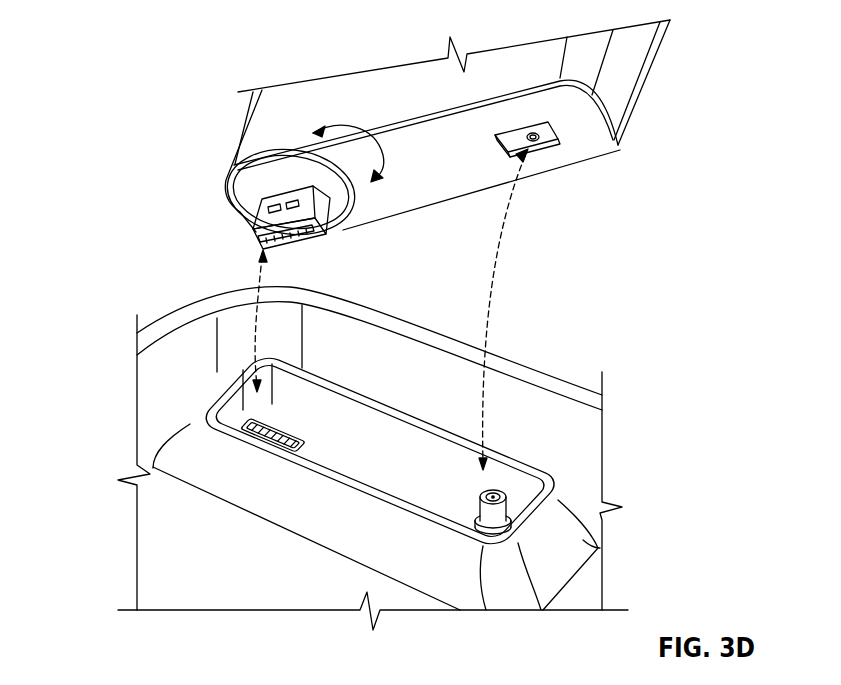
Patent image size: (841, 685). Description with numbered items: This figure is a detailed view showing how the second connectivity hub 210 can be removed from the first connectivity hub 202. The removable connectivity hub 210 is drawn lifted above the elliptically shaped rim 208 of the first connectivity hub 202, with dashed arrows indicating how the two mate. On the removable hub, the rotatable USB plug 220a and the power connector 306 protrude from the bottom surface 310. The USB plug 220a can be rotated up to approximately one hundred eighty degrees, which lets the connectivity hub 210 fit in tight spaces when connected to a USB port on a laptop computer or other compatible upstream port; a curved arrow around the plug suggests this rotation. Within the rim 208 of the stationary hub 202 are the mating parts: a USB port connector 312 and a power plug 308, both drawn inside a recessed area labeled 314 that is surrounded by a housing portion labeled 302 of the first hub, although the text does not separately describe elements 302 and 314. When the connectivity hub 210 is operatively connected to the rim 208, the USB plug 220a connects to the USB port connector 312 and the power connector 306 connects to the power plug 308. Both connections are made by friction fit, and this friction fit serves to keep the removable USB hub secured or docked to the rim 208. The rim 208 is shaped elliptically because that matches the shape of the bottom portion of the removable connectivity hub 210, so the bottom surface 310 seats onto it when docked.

The second connectivity hub 210 is at (238, 136).
The rotatable USB plug 220a is at (252, 228).
The power connector 306 is at (543, 151).
The bottom surface 310 is at (608, 147).
The housing 302 is at (148, 388).
The first connectivity hub 202 is at (148, 537).
The rim 208 is at (282, 522).
The recess 314 is at (390, 463).
The USB port connector 312 is at (285, 438).
The power plug 308 is at (513, 470).